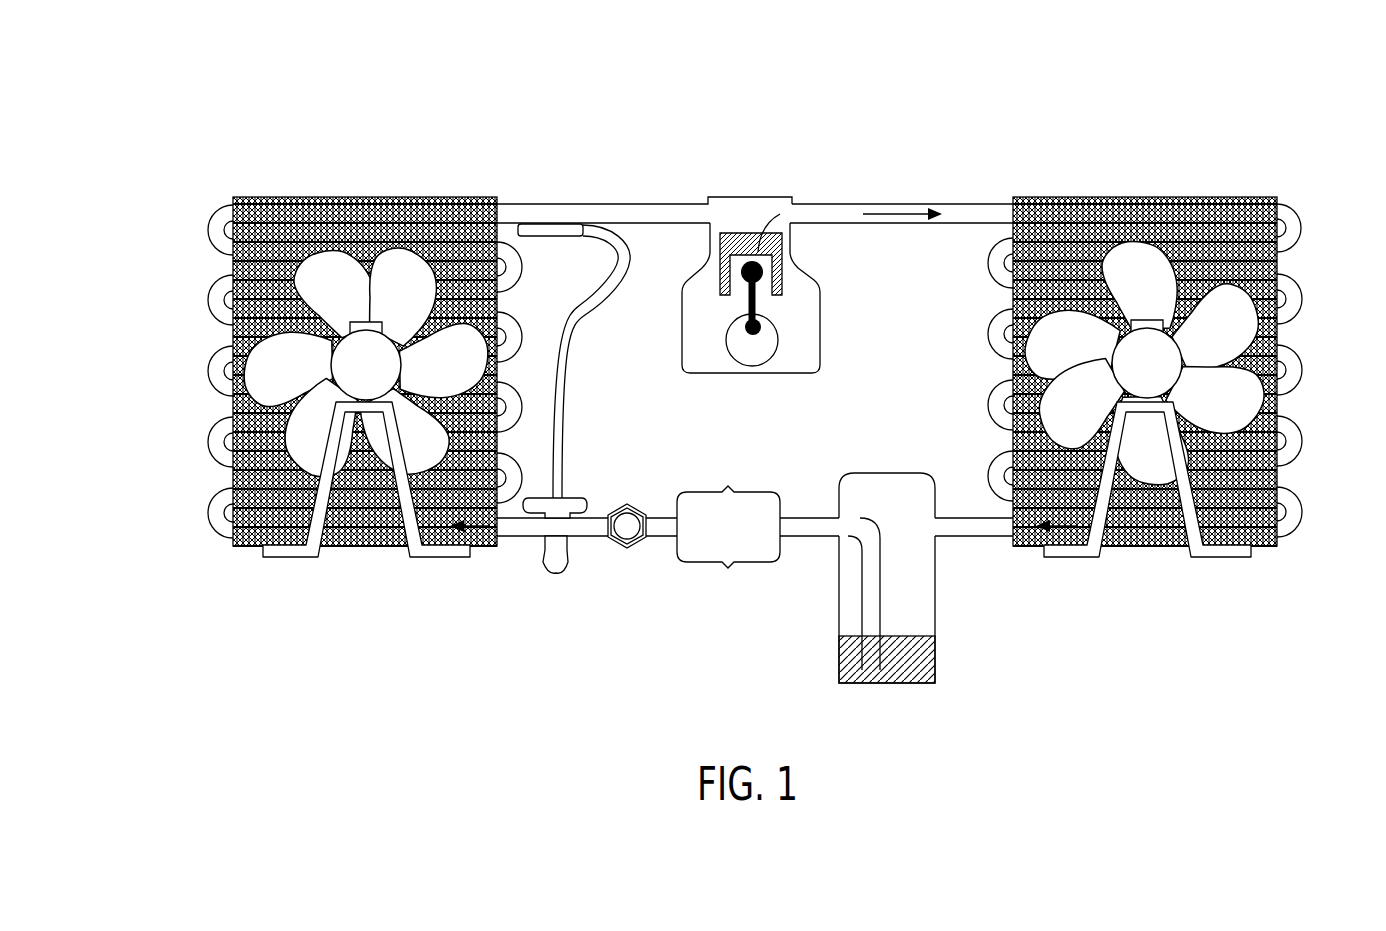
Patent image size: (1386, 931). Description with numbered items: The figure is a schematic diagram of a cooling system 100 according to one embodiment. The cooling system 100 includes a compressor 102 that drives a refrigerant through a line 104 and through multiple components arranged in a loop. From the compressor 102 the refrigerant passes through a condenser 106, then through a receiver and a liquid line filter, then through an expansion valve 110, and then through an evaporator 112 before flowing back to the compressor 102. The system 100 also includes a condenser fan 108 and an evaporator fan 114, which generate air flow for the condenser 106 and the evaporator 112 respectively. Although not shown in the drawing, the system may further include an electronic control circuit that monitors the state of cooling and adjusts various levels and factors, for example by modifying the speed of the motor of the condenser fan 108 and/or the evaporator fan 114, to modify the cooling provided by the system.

The cooling system 100 is at (1136, 98).
The compressor 102 is at (695, 325).
The line 104 is at (970, 212).
The condenser 106 is at (1290, 365).
The condenser fan 108 is at (1170, 370).
The expansion valve 110 is at (560, 528).
The evaporator 112 is at (218, 300).
The evaporator fan 114 is at (347, 382).